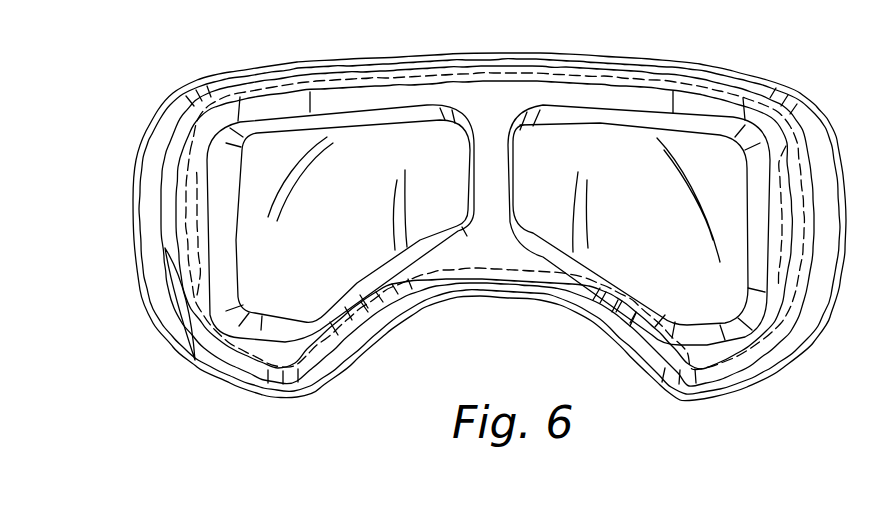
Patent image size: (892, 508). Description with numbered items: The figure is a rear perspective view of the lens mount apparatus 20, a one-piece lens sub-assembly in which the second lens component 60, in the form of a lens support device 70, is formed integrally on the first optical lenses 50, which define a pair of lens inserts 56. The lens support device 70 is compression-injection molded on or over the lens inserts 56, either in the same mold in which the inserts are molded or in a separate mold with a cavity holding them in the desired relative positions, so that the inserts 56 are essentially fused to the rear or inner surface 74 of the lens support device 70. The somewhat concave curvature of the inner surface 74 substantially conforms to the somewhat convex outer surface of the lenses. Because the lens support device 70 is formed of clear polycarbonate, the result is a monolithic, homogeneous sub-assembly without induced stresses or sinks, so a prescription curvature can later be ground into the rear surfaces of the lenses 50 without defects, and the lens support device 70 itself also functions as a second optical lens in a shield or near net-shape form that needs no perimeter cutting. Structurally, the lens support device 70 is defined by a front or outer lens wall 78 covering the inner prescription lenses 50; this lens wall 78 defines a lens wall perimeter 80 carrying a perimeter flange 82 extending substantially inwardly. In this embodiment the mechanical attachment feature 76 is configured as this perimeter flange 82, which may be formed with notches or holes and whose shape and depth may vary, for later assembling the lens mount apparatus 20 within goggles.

The lens mount apparatus 20 is at (93, 73).
The first optical lenses 50 is at (397, 335).
The lens inserts 56 is at (360, 326).
The second lens component 60 is at (132, 352).
The lens support device 70 is at (128, 302).
The inner surface 74 is at (508, 246).
The mechanical attachment feature 76 is at (128, 208).
The outer lens wall 78 is at (502, 100).
The lens wall perimeter 80 is at (195, 360).
The perimeter flange 82 is at (147, 133).